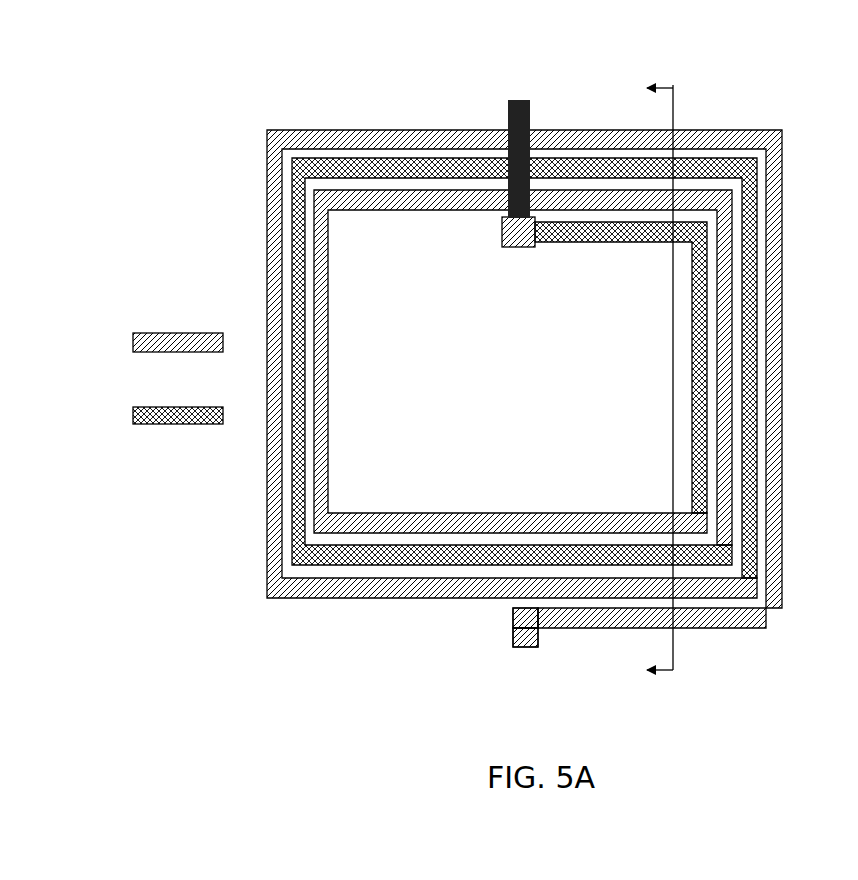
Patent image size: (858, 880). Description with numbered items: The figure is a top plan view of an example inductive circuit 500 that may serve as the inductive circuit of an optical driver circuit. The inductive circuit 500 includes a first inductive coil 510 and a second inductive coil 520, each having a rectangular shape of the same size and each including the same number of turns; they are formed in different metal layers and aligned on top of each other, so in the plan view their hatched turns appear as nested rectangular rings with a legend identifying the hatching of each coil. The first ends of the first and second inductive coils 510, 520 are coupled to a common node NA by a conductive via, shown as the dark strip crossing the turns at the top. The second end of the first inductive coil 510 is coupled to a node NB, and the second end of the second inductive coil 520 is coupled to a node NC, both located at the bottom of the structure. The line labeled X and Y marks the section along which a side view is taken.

The inductive circuit 500 is at (185, 100).
The first inductive coil 510 is at (122, 341).
The second inductive coil 520 is at (122, 414).
The common node NA is at (512, 100).
The node NB is at (513, 616).
The node NC is at (530, 637).